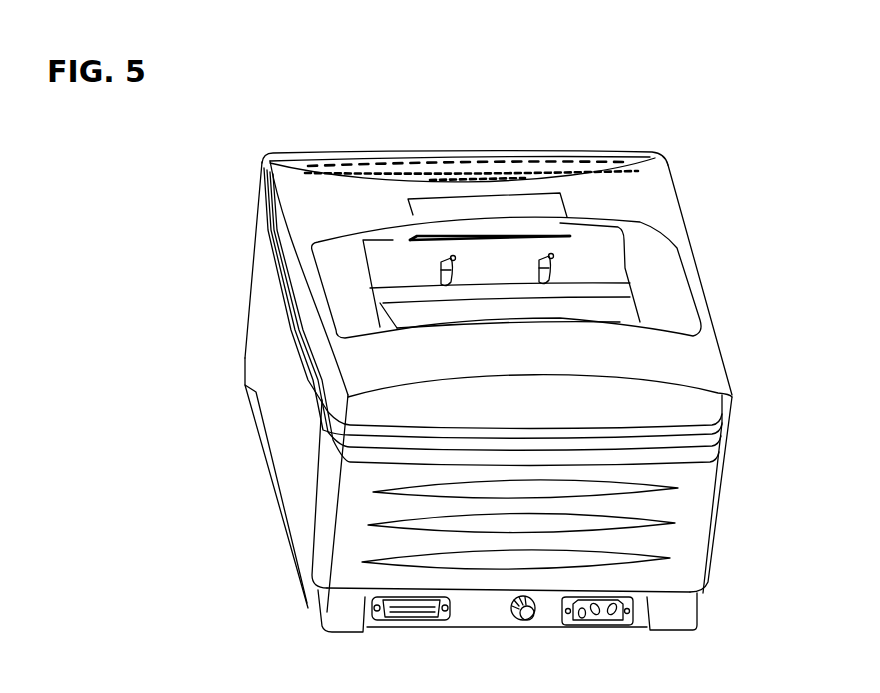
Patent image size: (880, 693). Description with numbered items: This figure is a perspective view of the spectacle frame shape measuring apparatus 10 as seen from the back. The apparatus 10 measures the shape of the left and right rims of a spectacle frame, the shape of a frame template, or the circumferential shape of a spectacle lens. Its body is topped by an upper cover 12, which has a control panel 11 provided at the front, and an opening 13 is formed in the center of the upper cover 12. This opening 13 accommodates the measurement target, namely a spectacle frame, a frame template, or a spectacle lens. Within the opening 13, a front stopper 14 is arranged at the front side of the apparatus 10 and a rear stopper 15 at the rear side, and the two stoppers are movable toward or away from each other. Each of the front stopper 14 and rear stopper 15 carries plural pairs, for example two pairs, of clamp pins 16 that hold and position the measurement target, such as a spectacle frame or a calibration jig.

The spectacle frame shape measuring apparatus 10 is at (677, 153).
The control panel 11 is at (546, 165).
The upper cover 12 is at (301, 191).
The opening 13 is at (427, 263).
The front stopper 14 is at (357, 243).
The rear stopper 15 is at (617, 311).
The clamp pins 16 is at (451, 258).